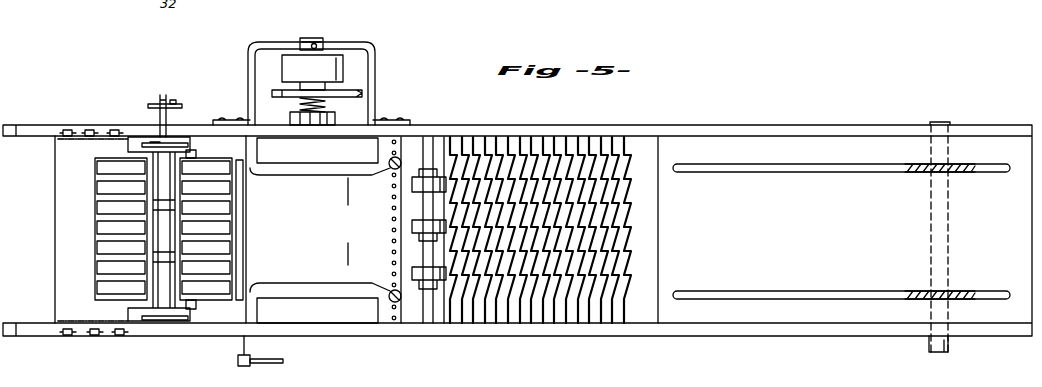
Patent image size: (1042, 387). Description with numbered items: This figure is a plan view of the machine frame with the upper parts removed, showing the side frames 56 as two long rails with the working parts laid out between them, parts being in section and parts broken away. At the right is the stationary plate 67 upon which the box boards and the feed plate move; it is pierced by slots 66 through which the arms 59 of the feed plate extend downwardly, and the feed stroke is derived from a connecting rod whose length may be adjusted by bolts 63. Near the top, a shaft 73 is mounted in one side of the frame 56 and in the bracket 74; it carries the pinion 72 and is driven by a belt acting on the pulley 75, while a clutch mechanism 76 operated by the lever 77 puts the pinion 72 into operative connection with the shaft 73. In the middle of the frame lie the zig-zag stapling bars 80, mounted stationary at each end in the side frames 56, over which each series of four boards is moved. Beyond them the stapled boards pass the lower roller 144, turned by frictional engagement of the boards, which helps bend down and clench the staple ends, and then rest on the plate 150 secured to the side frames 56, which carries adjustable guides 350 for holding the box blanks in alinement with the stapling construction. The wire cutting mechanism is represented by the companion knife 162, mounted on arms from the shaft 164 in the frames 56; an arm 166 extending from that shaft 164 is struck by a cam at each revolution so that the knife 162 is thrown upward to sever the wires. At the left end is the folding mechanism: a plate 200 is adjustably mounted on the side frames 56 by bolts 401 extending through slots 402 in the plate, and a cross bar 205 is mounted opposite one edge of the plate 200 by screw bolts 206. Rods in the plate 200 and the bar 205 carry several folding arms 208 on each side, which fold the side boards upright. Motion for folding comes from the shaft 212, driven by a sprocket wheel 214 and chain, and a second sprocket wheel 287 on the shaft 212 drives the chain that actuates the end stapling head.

The side frame 56 is at (33, 131).
The arms 59 is at (930, 172).
The bolts 63 is at (658, 3).
The slots 66 is at (797, 172).
The stationary plate 67 is at (751, 230).
The pinion 72 is at (334, 119).
The shaft 73 is at (315, 40).
The bracket 74 is at (249, 63).
The pulley 75 is at (312, 72).
The clutch mechanism 76 is at (299, 107).
The lever 77 is at (272, 92).
The stapling bars 80 is at (482, 150).
The lower roller 144 is at (412, 185).
The plate 150 is at (325, 230).
The companion knife 162 is at (243, 270).
The shaft 164 is at (246, 314).
The arm 166 is at (275, 364).
The plate 200 is at (55, 230).
The cross bar 205 is at (196, 153).
The screw bolts 206 is at (137, 149).
The folding arms 208 is at (110, 195).
The shaft 212 is at (158, 111).
The sprocket wheel 214 is at (174, 100).
The sprocket wheel 287 is at (176, 142).
The guides 350 is at (349, 221).
The bolts 401 is at (88, 128).
The slots 402 is at (60, 137).